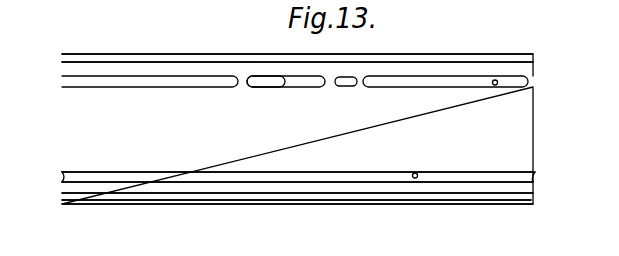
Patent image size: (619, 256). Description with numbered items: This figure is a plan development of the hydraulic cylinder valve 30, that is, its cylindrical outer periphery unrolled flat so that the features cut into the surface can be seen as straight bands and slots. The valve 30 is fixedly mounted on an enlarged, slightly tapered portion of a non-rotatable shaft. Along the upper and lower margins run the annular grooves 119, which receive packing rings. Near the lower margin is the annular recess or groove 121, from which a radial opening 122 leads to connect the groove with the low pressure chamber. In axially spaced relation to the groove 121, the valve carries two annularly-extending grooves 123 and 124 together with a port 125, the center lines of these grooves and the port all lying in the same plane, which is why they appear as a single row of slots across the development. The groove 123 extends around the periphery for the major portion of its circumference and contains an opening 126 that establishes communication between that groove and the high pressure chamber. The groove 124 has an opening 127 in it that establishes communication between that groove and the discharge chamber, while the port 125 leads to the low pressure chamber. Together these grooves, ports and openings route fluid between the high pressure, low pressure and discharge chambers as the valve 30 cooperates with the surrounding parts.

The hydraulic cylinder valve 30 is at (298, 129).
The annular grooves 119 is at (440, 62).
The annular recess or groove 121 is at (363, 175).
The radial opening 122 is at (414, 178).
The annularly-extending groove 123 is at (70, 81).
The annularly-extending groove 124 is at (297, 83).
The port 125 is at (343, 86).
The opening 126 is at (499, 85).
The opening 127 is at (258, 81).